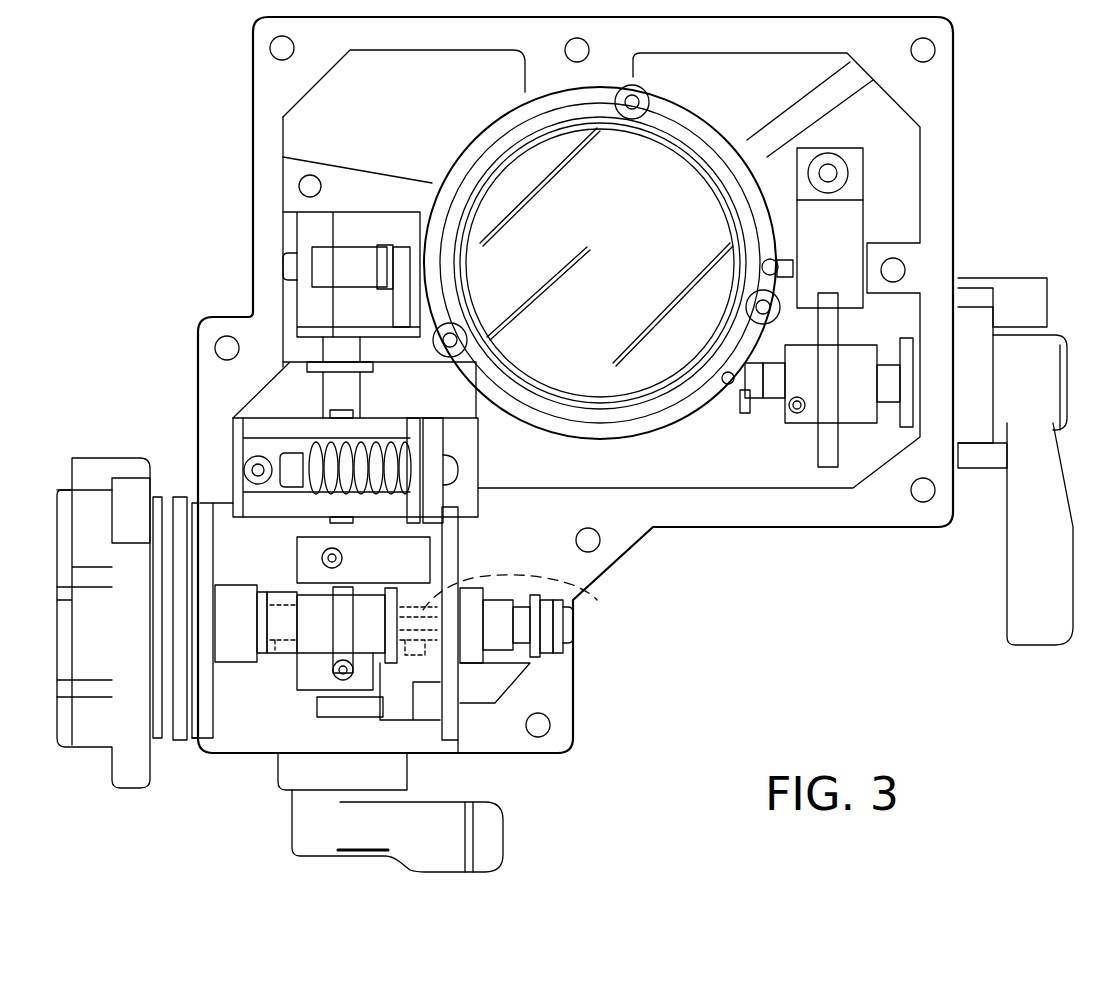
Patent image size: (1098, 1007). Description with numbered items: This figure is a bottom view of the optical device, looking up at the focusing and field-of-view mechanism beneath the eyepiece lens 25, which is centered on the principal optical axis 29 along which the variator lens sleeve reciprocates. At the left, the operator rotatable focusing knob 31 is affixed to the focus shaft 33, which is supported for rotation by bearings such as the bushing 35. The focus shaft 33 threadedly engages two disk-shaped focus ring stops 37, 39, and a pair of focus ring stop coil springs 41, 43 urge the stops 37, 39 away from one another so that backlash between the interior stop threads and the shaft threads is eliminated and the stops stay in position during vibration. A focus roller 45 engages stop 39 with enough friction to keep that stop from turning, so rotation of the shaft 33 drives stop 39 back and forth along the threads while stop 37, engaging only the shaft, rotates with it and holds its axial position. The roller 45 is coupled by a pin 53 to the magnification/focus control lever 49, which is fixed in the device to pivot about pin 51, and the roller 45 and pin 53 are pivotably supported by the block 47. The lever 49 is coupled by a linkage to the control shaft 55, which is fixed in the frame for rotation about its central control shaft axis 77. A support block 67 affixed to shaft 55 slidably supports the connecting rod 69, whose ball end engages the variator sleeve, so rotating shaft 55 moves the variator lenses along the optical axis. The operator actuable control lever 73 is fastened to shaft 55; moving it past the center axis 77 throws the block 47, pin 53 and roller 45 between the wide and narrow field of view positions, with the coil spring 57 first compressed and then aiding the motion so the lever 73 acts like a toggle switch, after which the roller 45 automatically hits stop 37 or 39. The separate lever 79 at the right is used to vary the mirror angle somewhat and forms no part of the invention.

The lens 25 is at (586, 208).
The principal optical axis 29 is at (600, 266).
The focusing knob 31 is at (83, 730).
The focus shaft 33 is at (270, 657).
The bushing 35 is at (560, 627).
The focus ring stop 37 is at (207, 732).
The focus ring stop 39 is at (460, 743).
The focus ring stop coil spring 41 is at (280, 597).
The focus ring stop coil spring 43 is at (452, 728).
The focus roller 45 is at (598, 585).
The block 47 is at (368, 571).
The magnification/focus control lever 49 is at (298, 458).
The pin 51 is at (338, 412).
The pin 53 is at (415, 510).
The control shaft 55 is at (335, 380).
The coil spring 57 is at (367, 447).
The support block 67 is at (312, 245).
The connecting rod 69 is at (353, 258).
The control lever 73 is at (460, 843).
The control shaft axis 77 is at (347, 862).
The lever 79 is at (1007, 576).